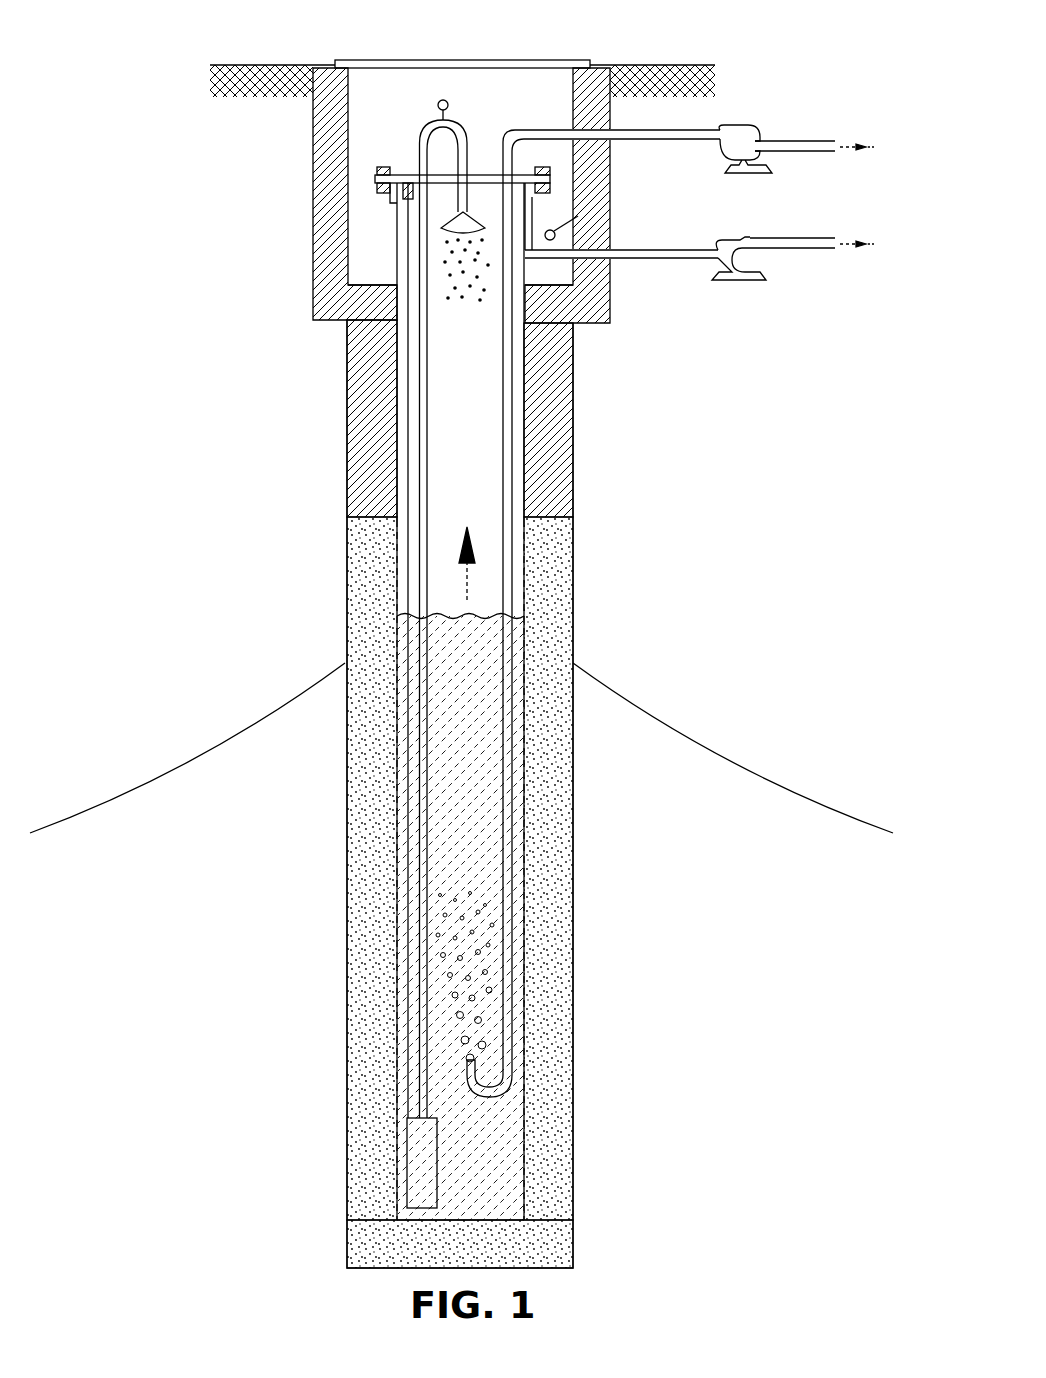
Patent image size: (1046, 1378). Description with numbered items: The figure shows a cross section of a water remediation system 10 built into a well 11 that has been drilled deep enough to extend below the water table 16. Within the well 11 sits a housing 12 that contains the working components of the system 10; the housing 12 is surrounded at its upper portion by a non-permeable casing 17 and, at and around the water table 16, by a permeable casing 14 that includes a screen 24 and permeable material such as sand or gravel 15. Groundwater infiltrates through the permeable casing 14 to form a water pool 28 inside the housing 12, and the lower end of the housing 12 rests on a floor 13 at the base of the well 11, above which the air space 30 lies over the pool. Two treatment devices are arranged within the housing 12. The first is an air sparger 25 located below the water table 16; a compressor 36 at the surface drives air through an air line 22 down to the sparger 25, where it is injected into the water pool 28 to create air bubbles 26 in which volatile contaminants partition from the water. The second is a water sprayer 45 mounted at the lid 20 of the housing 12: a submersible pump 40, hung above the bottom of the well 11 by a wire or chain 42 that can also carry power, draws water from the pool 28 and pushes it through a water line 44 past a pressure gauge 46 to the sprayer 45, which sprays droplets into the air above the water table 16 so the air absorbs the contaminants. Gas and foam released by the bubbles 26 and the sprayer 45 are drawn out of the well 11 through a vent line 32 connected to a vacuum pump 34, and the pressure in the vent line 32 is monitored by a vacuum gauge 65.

The water remediation system 10 is at (461, 637).
The well 11 is at (371, 56).
The housing 12 is at (386, 227).
The vault floor 13 is at (397, 270).
The permeable casing 14 is at (524, 822).
The sand or gravel 15 is at (550, 1200).
The water table 16 is at (185, 752).
The non-permeable casing 17 is at (365, 458).
The lid 20 is at (412, 178).
The air line 22 is at (636, 140).
The screen 24 is at (525, 592).
The air sparger 25 is at (503, 1097).
The air bubbles 26 is at (483, 1015).
The water pool 28 is at (482, 733).
The air space 30 is at (480, 452).
The vent line 32 is at (637, 260).
The vacuum pump 34 is at (748, 252).
The compressor 36 is at (745, 128).
The submersible pump 40 is at (415, 1190).
The wire or chain 42 is at (400, 1020).
The water line 44 is at (408, 930).
The water sprayer 45 is at (467, 225).
The pressure gauge 46 is at (443, 100).
The vacuum gauge 65 is at (580, 216).